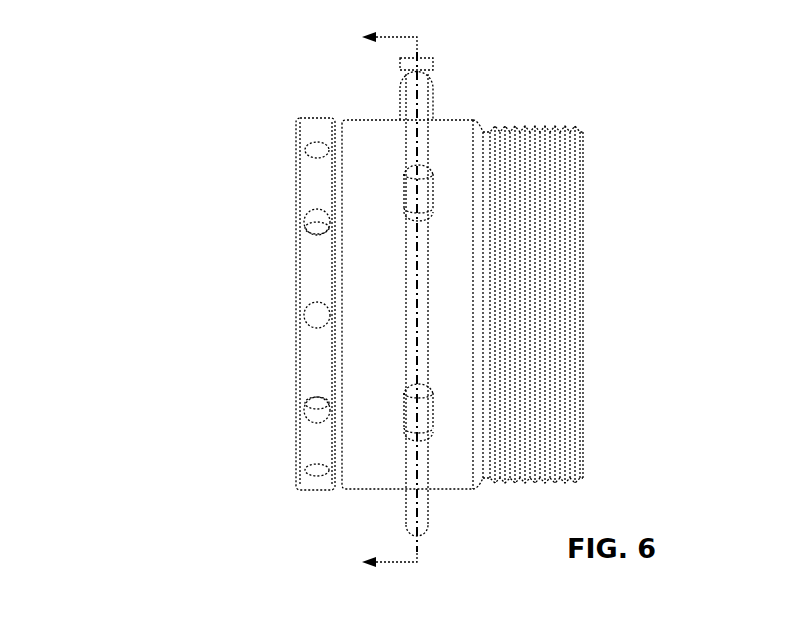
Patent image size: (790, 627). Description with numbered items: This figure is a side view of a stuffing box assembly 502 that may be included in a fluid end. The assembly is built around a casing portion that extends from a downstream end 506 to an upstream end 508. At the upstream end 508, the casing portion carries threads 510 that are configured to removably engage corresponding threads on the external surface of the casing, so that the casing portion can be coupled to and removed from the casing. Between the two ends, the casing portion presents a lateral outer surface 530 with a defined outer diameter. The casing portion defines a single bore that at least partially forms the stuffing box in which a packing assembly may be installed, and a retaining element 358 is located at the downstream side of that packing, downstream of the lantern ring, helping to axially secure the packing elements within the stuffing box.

The stuffing box assembly 502 is at (165, 97).
The downstream end 506 is at (326, 267).
The upstream end 508 is at (592, 226).
The threads 510 is at (551, 125).
The lateral outer surface 530 is at (466, 116).
The retaining element 358 is at (298, 393).